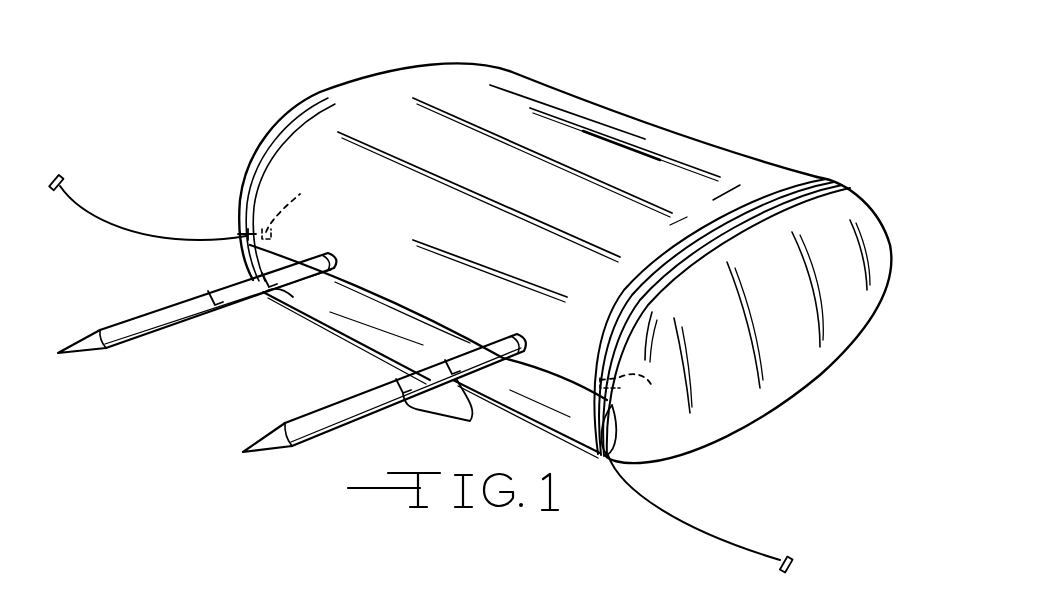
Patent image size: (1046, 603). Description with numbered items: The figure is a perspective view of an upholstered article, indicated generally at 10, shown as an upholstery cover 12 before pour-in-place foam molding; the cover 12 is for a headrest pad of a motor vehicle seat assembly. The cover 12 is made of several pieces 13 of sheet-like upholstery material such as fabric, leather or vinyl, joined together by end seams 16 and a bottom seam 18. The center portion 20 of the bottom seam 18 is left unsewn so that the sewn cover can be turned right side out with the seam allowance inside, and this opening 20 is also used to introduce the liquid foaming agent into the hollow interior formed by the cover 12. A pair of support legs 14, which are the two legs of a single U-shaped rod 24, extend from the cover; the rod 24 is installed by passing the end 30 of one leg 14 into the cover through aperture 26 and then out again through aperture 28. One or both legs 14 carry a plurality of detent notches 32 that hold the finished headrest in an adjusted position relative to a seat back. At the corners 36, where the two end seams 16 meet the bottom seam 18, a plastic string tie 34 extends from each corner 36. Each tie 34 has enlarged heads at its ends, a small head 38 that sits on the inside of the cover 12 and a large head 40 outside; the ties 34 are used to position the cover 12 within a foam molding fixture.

The anchored cushion assembly 10 is at (668, 90).
The upholstery cover 12 is at (736, 154).
The pieces of upholstery material 13 is at (523, 127).
The support legs 14 is at (140, 343).
The end seams 16 is at (300, 104).
The bottom seam 18 is at (540, 377).
The center portion of the seam (opening) 20 is at (410, 302).
The U-shaped rod 24 is at (365, 418).
The aperture 26 is at (337, 250).
The aperture 28 is at (527, 334).
The end of leg 30 is at (270, 458).
The detent notches 32 is at (213, 303).
The string tie 34 is at (163, 237).
The corners 36 is at (247, 230).
The small head 38 is at (468, 299).
The large head 40 is at (63, 177).